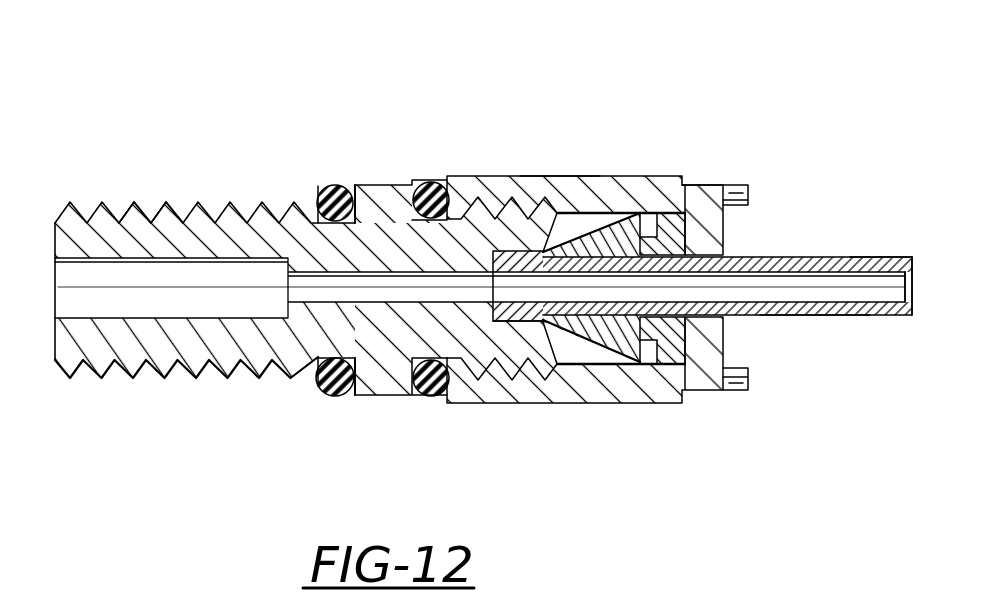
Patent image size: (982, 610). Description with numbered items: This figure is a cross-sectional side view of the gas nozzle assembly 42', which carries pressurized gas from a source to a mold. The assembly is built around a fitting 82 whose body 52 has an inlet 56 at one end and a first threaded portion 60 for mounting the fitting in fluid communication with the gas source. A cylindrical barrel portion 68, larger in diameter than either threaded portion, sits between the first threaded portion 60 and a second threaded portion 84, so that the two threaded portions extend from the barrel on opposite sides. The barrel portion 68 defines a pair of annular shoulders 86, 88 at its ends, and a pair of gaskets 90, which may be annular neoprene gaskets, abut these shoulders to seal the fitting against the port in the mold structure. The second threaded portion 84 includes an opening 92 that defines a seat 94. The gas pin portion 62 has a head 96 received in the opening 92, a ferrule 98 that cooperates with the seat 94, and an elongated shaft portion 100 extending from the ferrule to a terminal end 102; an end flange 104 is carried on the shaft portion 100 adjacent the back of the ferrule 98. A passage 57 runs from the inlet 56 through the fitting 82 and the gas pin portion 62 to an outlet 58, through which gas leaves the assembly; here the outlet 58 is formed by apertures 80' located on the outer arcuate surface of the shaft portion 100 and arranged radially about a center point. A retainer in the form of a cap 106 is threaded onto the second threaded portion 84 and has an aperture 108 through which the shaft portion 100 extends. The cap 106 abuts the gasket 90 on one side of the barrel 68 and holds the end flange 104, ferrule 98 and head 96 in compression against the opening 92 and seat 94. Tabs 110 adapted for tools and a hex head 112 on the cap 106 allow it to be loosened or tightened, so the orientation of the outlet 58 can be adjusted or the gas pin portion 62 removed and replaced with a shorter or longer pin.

The gas nozzle assembly 42' is at (733, 97).
The body 52 is at (294, 342).
The inlet 56 is at (46, 253).
The passage 57 is at (397, 302).
The outlet 58 is at (797, 335).
The first threaded portion 60 is at (162, 202).
The gas pin portion 62 is at (870, 256).
The barrel portion 68 is at (384, 183).
The apertures 80' is at (861, 382).
The fitting 82 is at (237, 202).
The second threaded portion 84 is at (503, 178).
The annular shoulder 86 is at (350, 185).
The annular shoulder 88 is at (424, 182).
The gaskets 90 is at (321, 192).
The opening 92 is at (493, 320).
The seat 94 is at (592, 222).
The head 96 is at (538, 324).
The ferrule 98 is at (622, 208).
The shaft portion 100 is at (770, 258).
The terminal end 102 is at (917, 308).
The end flange 104 is at (683, 357).
The cap 106 is at (552, 175).
The aperture 108 is at (738, 316).
The tabs 110 is at (748, 199).
The hex head 112 is at (706, 183).